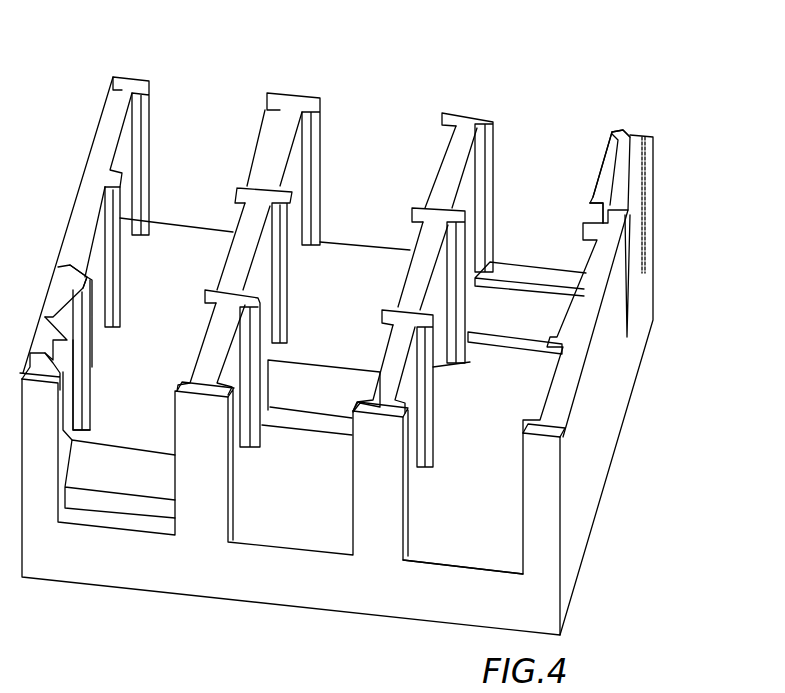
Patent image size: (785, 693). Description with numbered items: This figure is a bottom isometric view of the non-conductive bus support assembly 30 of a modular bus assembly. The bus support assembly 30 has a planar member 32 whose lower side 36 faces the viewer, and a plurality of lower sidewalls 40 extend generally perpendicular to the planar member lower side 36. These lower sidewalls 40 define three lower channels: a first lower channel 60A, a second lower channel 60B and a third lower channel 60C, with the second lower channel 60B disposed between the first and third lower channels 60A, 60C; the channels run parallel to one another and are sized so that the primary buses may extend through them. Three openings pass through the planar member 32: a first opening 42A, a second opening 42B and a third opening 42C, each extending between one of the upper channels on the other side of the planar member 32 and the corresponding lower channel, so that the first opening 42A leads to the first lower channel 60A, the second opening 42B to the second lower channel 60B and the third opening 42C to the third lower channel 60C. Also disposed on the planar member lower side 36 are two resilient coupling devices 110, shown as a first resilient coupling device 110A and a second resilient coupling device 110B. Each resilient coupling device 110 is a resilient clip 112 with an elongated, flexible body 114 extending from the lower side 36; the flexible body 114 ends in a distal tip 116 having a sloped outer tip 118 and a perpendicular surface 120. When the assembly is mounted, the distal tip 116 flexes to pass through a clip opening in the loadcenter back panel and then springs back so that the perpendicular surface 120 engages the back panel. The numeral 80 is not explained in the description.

The bus support assembly 30 is at (270, 595).
The planar member 32 is at (360, 252).
The lower side 36 is at (482, 556).
The lower sidewall 40 is at (103, 136).
The first opening 42A is at (521, 340).
The second opening 42B is at (320, 423).
The third opening 42C is at (123, 505).
The first lower channel 60A is at (551, 125).
The second lower channel 60B is at (366, 128).
The third lower channel 60C is at (197, 90).
The assembly 80 is at (331, 679).
The resilient coupling device 110 is at (716, 180).
The resilient coupling device 110A is at (60, 300).
The resilient coupling device 110B is at (623, 132).
The resilient clip 112 is at (67, 303).
The flexible body 114 is at (67, 392).
The distal tip 116 is at (624, 130).
The sloped outer tip 118 is at (600, 170).
The perpendicular surface 120 is at (60, 340).